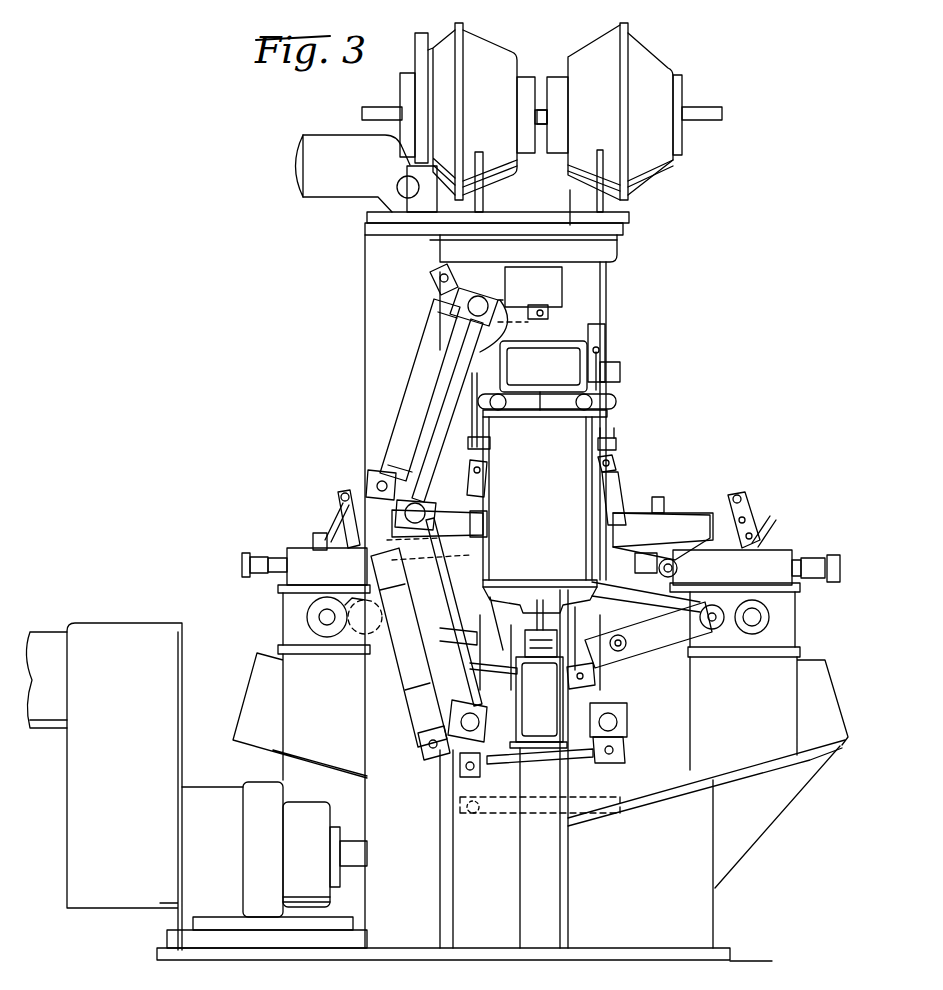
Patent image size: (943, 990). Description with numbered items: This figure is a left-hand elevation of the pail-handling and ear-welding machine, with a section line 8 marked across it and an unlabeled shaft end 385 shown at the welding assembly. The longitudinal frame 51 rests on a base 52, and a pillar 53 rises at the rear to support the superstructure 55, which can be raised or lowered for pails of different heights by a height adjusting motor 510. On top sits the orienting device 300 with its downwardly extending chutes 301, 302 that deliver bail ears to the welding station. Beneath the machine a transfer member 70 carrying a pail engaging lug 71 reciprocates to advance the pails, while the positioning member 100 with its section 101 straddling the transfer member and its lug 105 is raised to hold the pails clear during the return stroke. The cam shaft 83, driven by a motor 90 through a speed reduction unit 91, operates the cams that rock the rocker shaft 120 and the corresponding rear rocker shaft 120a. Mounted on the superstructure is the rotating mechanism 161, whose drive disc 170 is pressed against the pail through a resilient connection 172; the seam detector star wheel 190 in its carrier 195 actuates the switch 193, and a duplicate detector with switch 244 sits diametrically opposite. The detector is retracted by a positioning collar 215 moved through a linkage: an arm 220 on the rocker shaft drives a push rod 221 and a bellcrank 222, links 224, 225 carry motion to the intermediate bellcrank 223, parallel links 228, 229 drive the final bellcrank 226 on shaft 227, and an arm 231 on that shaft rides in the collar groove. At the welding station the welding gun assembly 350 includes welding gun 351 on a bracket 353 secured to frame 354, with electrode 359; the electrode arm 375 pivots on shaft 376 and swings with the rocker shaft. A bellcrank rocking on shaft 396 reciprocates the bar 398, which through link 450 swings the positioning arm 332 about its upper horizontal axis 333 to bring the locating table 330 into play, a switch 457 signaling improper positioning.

The orienting device 300 is at (497, 49).
The chute 301 is at (598, 162).
The chute 302 is at (483, 201).
The section line 8 is at (576, 208).
The motor 510 is at (312, 148).
The pillar 53 is at (372, 402).
The superstructure 55 is at (620, 259).
The positioning collar 215 is at (560, 300).
The arm 231 is at (550, 312).
The final bellcrank 226 is at (456, 283).
The shaft 227 is at (481, 297).
The rotating mechanism 161 is at (604, 335).
The switch 193 is at (622, 371).
The carrier 195 is at (632, 359).
The drive disc 170 is at (488, 456).
The resilient connection 172 is at (494, 425).
The star wheel 190 is at (618, 437).
The upper horizontal axis 333 is at (614, 466).
The positioning arm 332 is at (617, 503).
The link 229 is at (456, 378).
The link 228 is at (430, 335).
The switch 244 is at (447, 410).
The link 224 is at (424, 706).
The link 225 is at (426, 680).
The rocker shaft 120a is at (461, 720).
The bellcrank 222 is at (440, 766).
The push rod 221 is at (578, 757).
The rocker shaft 120 is at (616, 722).
The arm 220 is at (618, 743).
The transfer member 70 is at (500, 643).
The pail engaging lug 71 is at (538, 600).
The section 101 is at (592, 588).
The lug 105 is at (546, 568).
The positioning member 100 is at (564, 521).
The intermediate bellcrank 223 is at (362, 496).
The switch 457 is at (694, 498).
The welding gun assembly 350 is at (751, 491).
The link 450 is at (759, 516).
The reciprocating bar 398 is at (767, 532).
The welding gun 351 is at (779, 549).
The shaft end 385 is at (836, 575).
The locating table 330 is at (622, 562).
The electrode 359 is at (665, 578).
The bracket 353 is at (797, 588).
The frame 354 is at (784, 618).
The shaft 376 is at (712, 630).
The shaft 396 is at (752, 630).
The electrode arm 375 is at (660, 633).
The base 52 is at (713, 903).
The longitudinal frame 51 is at (553, 850).
The speed reduction unit 91 is at (186, 711).
The motor 90 is at (50, 630).
The cam shaft 83 is at (364, 855).